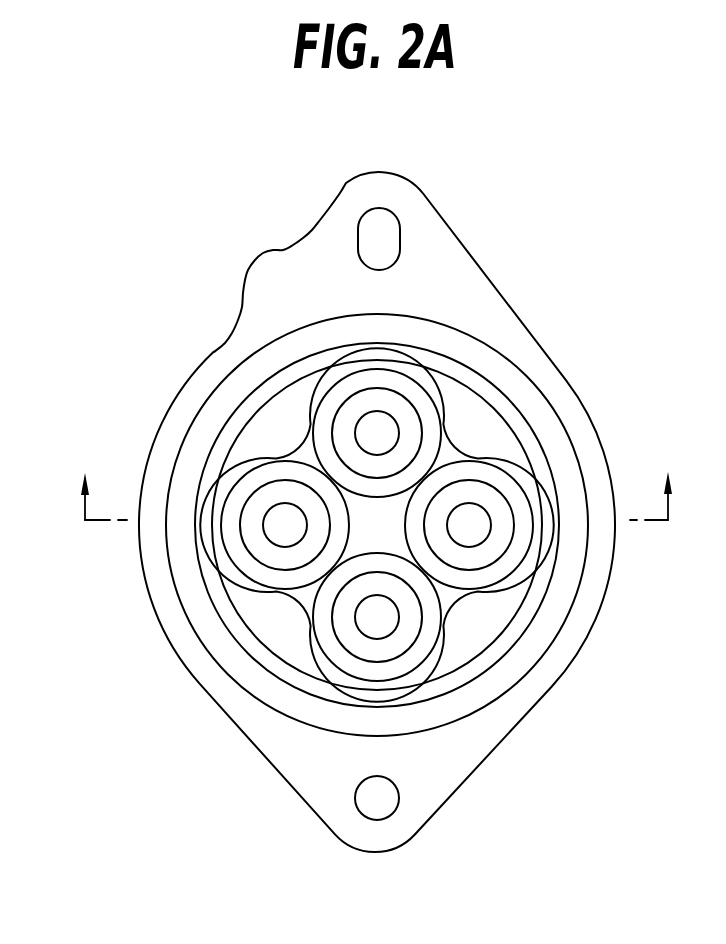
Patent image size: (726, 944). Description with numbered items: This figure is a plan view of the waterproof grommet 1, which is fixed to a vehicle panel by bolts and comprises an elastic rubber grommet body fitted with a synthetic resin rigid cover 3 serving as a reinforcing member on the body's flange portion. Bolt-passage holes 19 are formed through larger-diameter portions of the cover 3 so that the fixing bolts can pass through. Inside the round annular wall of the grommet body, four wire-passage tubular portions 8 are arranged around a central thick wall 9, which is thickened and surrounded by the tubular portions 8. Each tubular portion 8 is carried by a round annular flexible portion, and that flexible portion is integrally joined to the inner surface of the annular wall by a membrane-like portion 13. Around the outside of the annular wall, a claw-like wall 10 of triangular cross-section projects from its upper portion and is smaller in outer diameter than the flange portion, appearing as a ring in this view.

The waterproof grommet 1 is at (208, 214).
The cover 3 is at (457, 278).
The wire-passage tubular portion 8 is at (480, 577).
The thick wall 9 is at (382, 512).
The claw-like wall 10 is at (570, 614).
The membrane-like portion 13 is at (463, 630).
The bolt-passage hole 19 is at (385, 232).